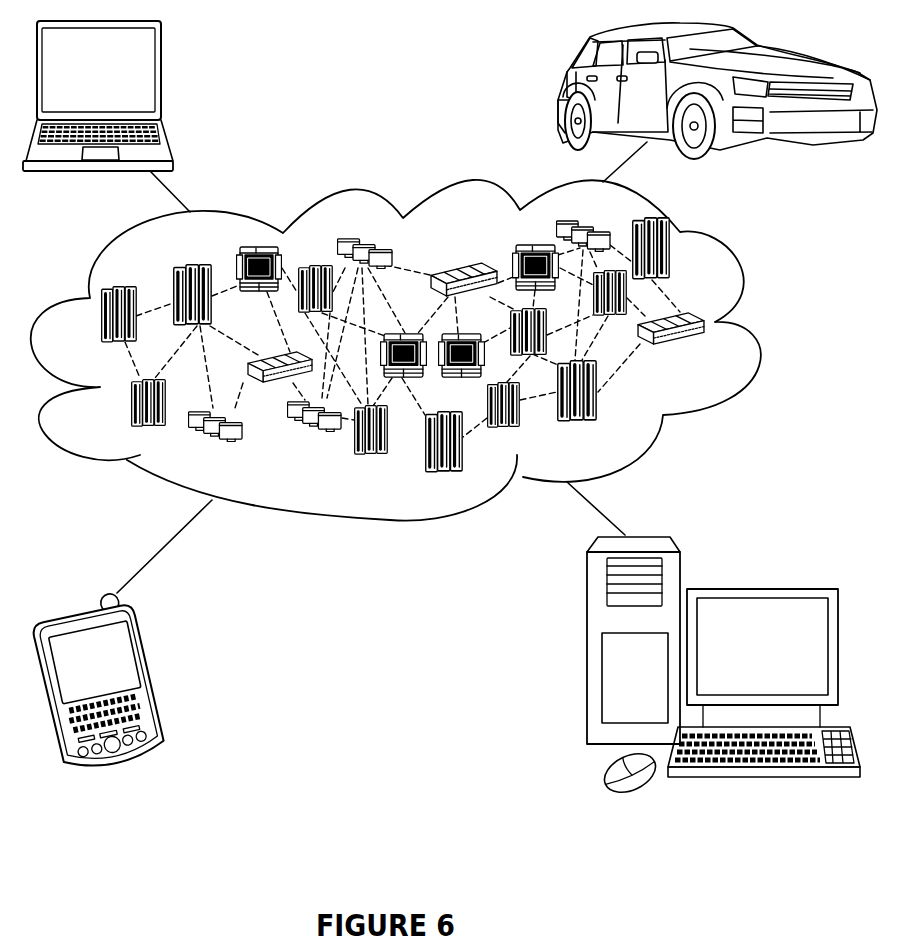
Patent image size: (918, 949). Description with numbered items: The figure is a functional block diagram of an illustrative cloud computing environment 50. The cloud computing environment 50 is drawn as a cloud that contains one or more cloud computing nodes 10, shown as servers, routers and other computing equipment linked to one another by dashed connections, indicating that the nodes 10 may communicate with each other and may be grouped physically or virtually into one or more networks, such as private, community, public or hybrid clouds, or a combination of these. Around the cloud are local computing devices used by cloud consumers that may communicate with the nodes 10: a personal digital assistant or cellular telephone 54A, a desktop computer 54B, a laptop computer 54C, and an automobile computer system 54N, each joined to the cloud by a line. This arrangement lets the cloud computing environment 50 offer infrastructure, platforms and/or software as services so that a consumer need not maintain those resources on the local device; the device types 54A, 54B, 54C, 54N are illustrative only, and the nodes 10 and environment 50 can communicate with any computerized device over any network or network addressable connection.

The cloud computing nodes 10 is at (703, 352).
The cloud computing environment 50 is at (423, 350).
The personal digital assistant or cellular telephone 54A is at (153, 675).
The desktop computer 54B is at (762, 588).
The laptop computer 54C is at (163, 80).
The automobile computer system 54N is at (558, 90).